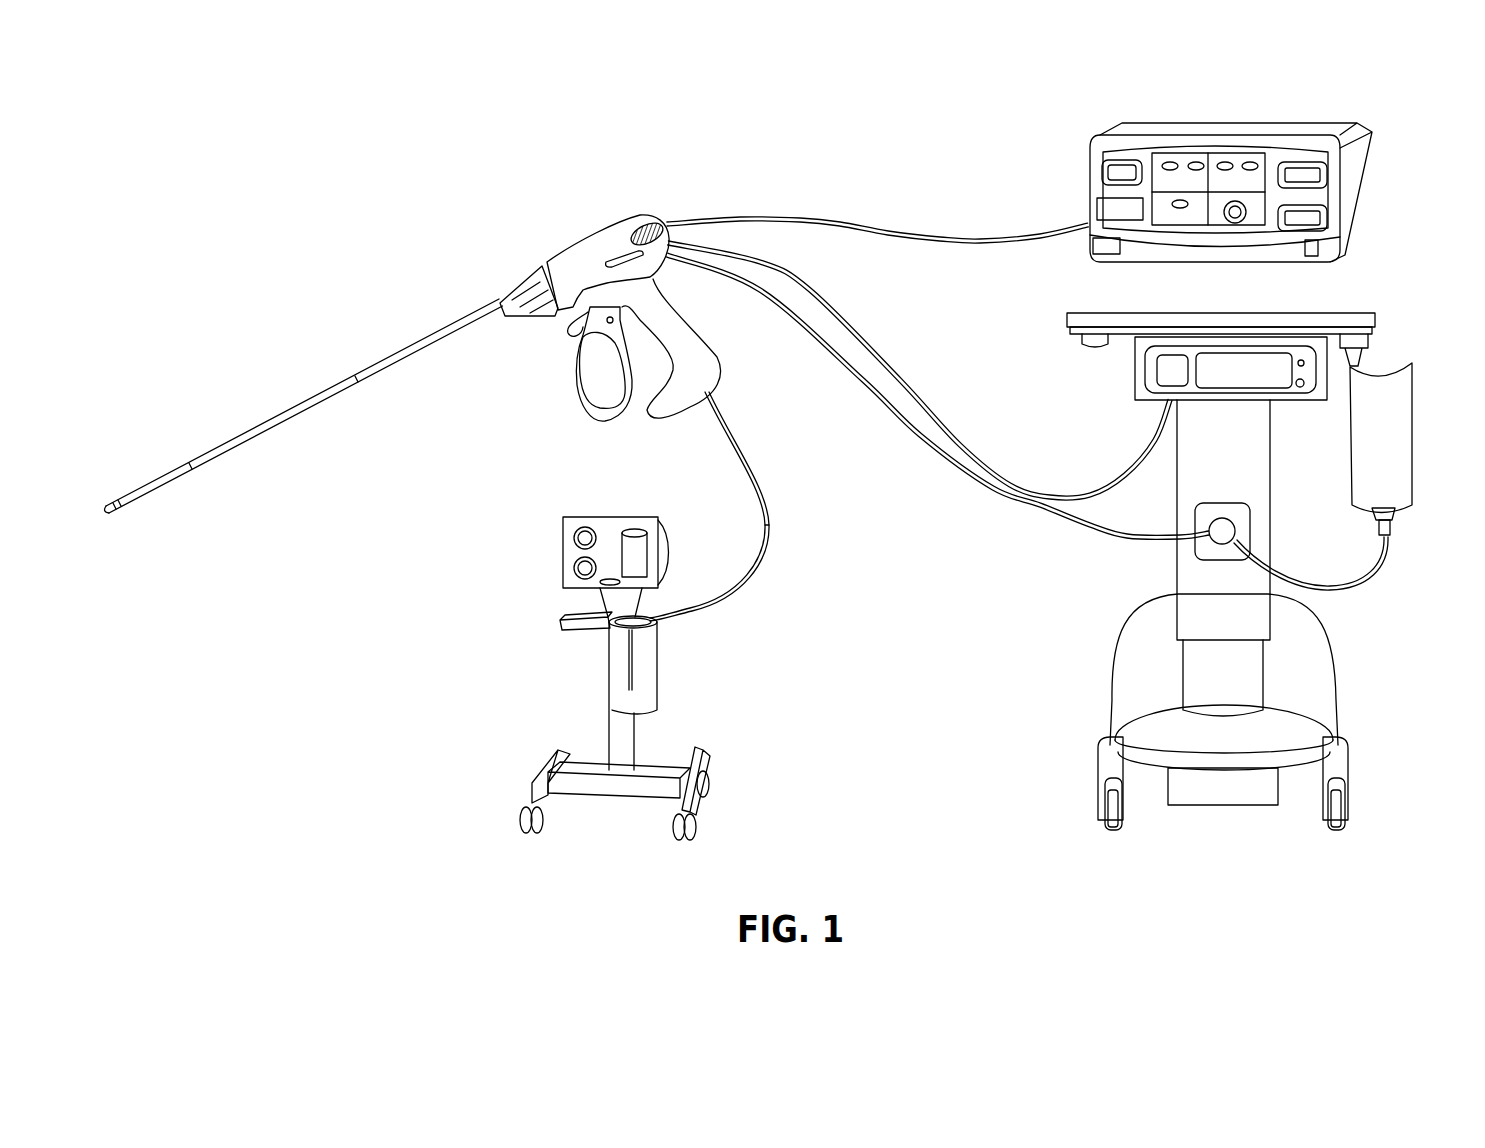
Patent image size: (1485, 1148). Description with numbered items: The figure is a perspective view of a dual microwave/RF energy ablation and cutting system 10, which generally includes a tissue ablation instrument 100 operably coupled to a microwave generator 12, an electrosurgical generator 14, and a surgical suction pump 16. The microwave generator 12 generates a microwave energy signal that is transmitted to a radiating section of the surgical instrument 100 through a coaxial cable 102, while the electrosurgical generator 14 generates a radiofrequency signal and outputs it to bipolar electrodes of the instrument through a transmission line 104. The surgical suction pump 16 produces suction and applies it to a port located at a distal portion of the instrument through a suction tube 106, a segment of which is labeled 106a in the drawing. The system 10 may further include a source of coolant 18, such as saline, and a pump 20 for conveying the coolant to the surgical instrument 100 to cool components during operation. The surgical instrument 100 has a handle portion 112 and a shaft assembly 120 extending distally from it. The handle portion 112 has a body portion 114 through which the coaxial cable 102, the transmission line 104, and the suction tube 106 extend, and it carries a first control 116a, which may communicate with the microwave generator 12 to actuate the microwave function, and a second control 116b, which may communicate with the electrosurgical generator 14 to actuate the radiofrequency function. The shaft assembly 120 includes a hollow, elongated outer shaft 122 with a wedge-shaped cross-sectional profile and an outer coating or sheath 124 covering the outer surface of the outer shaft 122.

The dual microwave/RF energy ablation and cutting system 10 is at (752, 134).
The tissue ablation instrument 100 is at (374, 298).
The handle portion 112 is at (622, 208).
The body portion 114 is at (567, 246).
The first control 116a is at (549, 322).
The second control 116b is at (570, 390).
The shaft assembly 120 is at (390, 383).
The outer shaft 122 is at (110, 517).
The outer coating or sheath 124 is at (315, 400).
The transmission line 104 is at (972, 232).
The coaxial cable 102 is at (880, 346).
The suction tube 106 is at (770, 519).
The tube segment 106a is at (716, 397).
The electrosurgical generator 14 is at (1258, 128).
The microwave generator 12 is at (1328, 355).
The source of coolant 18 is at (1393, 453).
The pump 20 is at (1212, 537).
The surgical suction pump 16 is at (598, 523).